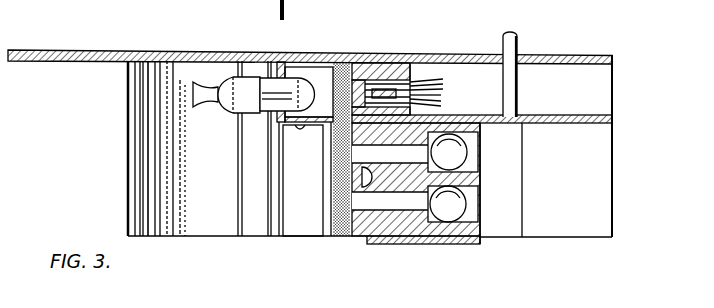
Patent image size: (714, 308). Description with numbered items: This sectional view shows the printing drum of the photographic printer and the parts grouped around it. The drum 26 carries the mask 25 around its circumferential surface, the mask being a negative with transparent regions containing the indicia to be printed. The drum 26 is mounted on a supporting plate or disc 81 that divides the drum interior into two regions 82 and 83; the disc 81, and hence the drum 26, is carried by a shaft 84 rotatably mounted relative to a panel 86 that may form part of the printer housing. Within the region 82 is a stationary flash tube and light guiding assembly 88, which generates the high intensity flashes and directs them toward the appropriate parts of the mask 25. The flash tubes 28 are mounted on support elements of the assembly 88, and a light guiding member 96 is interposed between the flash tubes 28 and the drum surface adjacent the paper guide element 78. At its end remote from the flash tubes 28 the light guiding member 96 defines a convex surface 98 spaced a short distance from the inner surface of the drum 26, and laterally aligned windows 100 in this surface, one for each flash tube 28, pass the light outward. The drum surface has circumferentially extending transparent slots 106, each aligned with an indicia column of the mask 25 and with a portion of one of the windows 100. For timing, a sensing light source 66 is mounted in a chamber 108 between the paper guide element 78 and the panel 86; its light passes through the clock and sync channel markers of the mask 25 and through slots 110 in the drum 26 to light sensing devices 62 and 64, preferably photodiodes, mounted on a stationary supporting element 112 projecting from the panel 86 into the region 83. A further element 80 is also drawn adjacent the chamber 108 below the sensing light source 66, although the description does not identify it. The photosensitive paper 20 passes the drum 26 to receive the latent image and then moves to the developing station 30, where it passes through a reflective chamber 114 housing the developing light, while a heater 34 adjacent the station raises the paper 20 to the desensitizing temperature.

The chamber 114 is at (129, 151).
The paper guide element 78 is at (266, 237).
The sensing light source 66 is at (288, 83).
The chamber 108 is at (322, 64).
The slots 110 is at (360, 64).
The light sensing device 64 is at (378, 84).
The light sensing device 62 is at (410, 68).
The panel 86 is at (446, 55).
The shaft 84 is at (518, 33).
The stationary supporting element 112 is at (448, 90).
The region 83 is at (568, 102).
The supporting plate 81 is at (582, 125).
The region 82 is at (557, 194).
The flash tube and light guiding assembly 88 is at (490, 208).
The flash tubes 28 is at (476, 158).
The windows 100 is at (360, 160).
The convex surface 98 is at (352, 222).
The slots 106 is at (333, 196).
The casing 80 is at (292, 205).
The paper strip 20 is at (332, 206).
The mask 25 is at (342, 238).
The drum 26 is at (352, 237).
The light guiding member 96 is at (401, 243).
The developing station 30 is at (438, 245).
The heater 34 is at (505, 224).